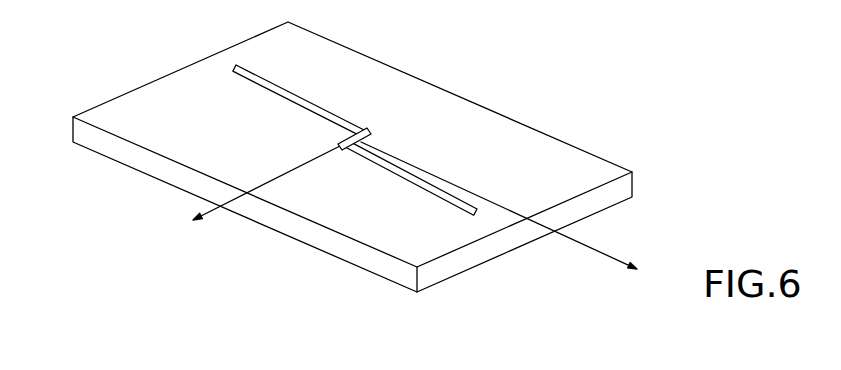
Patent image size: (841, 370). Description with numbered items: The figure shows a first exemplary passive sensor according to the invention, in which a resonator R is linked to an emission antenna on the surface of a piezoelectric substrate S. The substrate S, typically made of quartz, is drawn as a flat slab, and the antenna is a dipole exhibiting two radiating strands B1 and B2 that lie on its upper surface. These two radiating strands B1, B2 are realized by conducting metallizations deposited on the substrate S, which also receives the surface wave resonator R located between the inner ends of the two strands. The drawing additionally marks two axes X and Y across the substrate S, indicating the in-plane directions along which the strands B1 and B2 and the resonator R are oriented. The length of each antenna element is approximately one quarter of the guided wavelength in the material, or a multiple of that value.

The piezoelectric substrate S is at (363, 157).
The first radiating strand B1 is at (315, 110).
The second radiating strand B2 is at (413, 180).
The resonator R is at (339, 142).
The X axis X is at (508, 213).
The Y axis Y is at (255, 191).